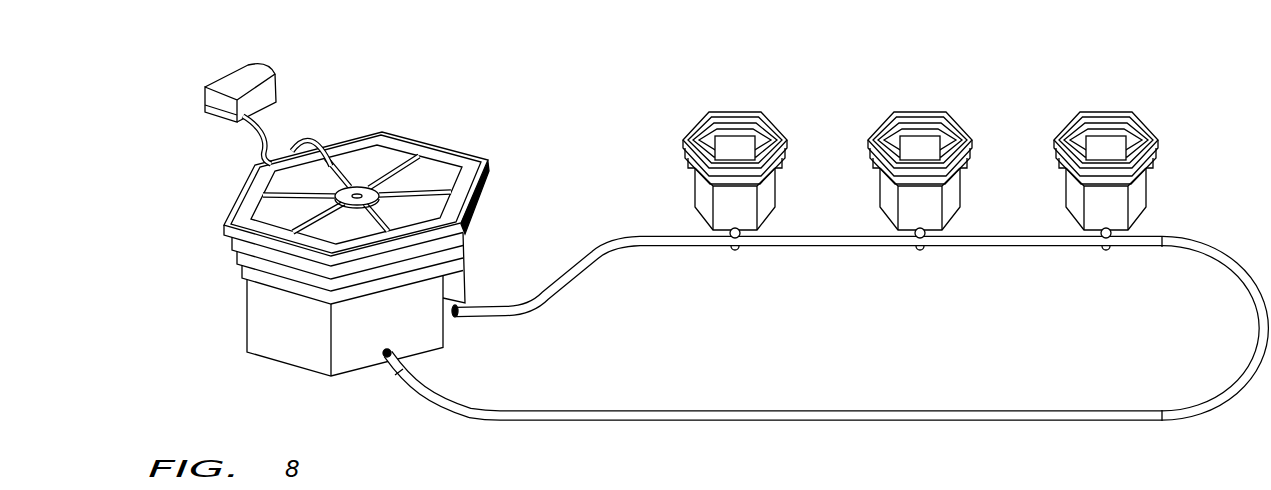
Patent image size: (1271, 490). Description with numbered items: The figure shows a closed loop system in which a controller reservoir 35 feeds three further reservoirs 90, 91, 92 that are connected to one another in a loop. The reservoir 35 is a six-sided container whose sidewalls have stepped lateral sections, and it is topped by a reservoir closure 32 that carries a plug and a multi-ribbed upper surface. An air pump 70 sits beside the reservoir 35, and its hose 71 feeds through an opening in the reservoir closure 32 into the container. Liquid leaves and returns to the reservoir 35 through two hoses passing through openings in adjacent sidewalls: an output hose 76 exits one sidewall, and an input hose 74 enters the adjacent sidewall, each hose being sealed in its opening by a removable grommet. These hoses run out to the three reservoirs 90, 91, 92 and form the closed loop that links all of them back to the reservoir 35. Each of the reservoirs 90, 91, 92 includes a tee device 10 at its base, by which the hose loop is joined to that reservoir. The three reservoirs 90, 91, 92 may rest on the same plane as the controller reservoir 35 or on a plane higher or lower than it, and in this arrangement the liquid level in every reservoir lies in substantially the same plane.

The tee device 10 is at (920, 272).
The reservoir closure 32 is at (366, 166).
The reservoir 35 is at (295, 228).
The air pump 70 is at (213, 101).
The hose 71 is at (256, 137).
The input hose 74 is at (437, 402).
The output hose 76 is at (535, 306).
The reservoir 90 is at (735, 138).
The reservoir 91 is at (920, 138).
The reservoir 92 is at (1106, 138).